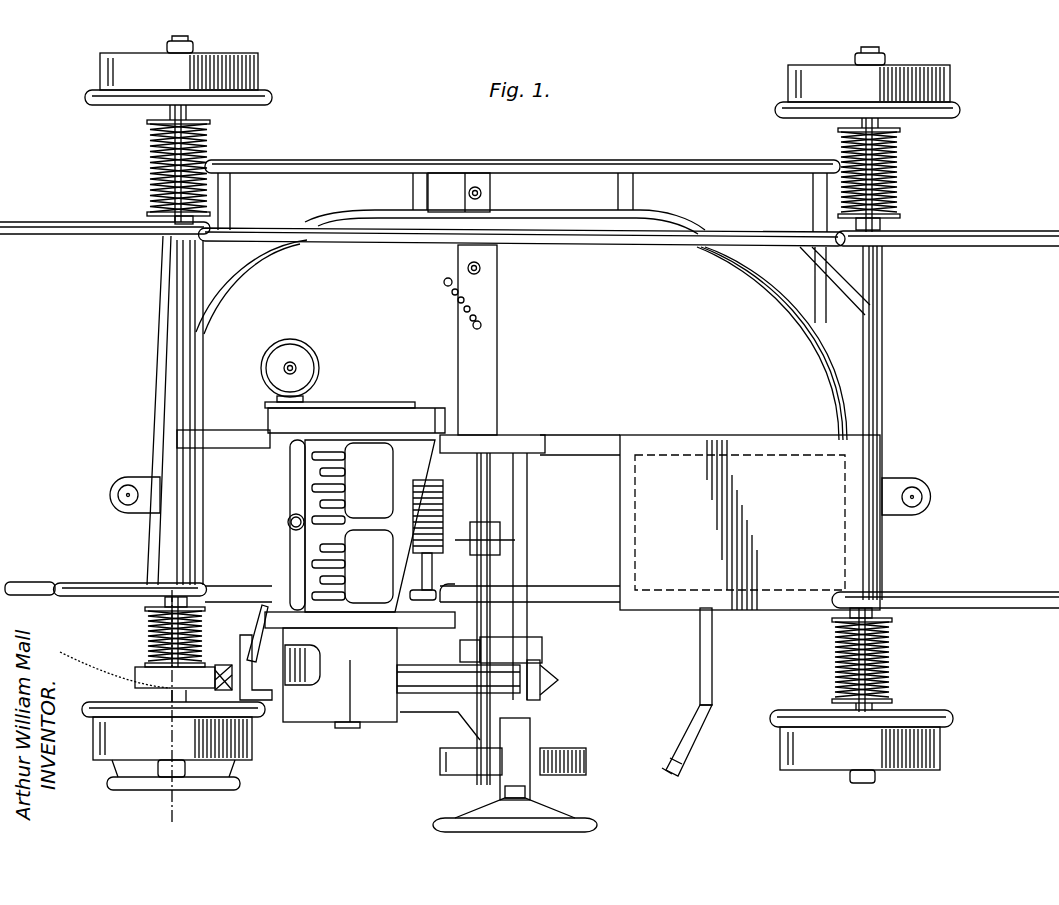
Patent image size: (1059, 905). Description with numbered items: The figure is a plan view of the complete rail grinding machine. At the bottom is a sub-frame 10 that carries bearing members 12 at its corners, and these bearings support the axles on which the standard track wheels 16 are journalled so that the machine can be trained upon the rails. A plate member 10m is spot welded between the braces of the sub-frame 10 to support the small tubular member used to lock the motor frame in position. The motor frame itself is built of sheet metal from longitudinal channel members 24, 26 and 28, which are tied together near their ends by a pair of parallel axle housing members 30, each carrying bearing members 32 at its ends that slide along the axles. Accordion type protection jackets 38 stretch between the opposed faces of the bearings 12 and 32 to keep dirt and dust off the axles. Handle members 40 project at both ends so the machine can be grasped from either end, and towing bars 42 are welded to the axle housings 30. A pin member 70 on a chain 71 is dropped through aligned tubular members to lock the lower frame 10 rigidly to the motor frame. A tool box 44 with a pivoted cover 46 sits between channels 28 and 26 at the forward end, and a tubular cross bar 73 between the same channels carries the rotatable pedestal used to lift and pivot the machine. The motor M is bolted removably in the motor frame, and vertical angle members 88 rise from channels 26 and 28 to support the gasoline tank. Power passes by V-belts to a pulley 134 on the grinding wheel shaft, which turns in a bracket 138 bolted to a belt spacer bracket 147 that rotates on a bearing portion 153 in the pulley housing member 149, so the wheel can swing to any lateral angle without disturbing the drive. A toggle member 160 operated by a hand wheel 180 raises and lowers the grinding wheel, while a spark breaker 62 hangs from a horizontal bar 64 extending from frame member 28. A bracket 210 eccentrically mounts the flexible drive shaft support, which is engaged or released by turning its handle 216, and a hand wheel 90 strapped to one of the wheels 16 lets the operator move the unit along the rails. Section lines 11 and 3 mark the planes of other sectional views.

The sub-frame 10 is at (504, 162).
The plate member 10m is at (483, 203).
The longitudinal channel member 24 is at (596, 246).
The handle members 40 is at (53, 235).
The longitudinal channel member 28 is at (572, 592).
The longitudinal channel member 26 is at (572, 442).
The axle housing members 30 is at (172, 352).
The towing bars 42 is at (118, 493).
The track wheels 16 is at (243, 77).
The bearing members 12 is at (163, 111).
The accordion type protection jackets 38 is at (147, 176).
The bearing members 32 is at (173, 218).
The pin member 70 is at (453, 285).
The chain 71 is at (478, 324).
The vertical angle members 88 is at (262, 434).
The motor M is at (288, 522).
The cross bar 73 is at (487, 485).
The tool box 44 is at (758, 472).
The cover 46 is at (668, 447).
The pulley housing member 149 is at (333, 718).
The belt spacer bracket 147 is at (413, 713).
The bracket 138 is at (537, 640).
The pulley 134 is at (553, 680).
The toggle member 160 is at (525, 760).
The bearing portion 153 is at (473, 765).
The hand wheel 180 is at (550, 825).
The horizontal bar 64 is at (708, 670).
The spark breaker 62 is at (688, 765).
The bracket 210 is at (257, 628).
The handle 216 is at (241, 640).
The hand wheel 90 is at (113, 790).
The section line 11 is at (68, 690).
The section line 3 is at (200, 45).